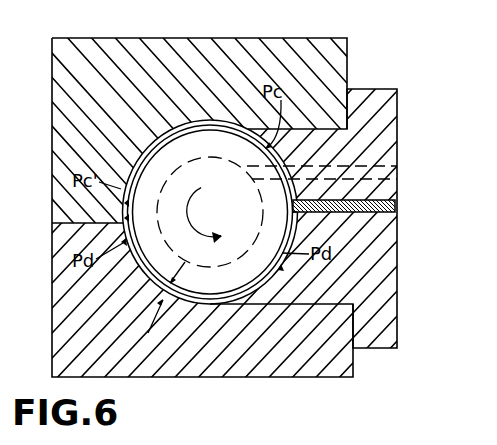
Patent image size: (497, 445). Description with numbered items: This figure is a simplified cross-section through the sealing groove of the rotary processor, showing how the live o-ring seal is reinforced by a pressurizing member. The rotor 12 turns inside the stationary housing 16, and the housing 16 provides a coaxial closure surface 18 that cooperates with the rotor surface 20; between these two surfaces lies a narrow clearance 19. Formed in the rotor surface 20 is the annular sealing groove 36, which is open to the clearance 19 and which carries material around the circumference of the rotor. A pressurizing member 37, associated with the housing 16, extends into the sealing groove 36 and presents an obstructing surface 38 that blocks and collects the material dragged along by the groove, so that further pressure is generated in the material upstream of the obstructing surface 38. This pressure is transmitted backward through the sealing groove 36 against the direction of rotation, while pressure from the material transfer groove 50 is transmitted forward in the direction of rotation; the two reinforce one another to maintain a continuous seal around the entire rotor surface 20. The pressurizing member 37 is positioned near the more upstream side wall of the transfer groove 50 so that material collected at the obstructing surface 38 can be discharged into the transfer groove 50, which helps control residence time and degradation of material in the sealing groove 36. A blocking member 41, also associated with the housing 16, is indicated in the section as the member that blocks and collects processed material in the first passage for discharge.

The rotor 12 is at (165, 260).
The housing 16 is at (65, 323).
The closure surface 18 is at (213, 304).
The clearance 19 is at (170, 296).
The rotor surface 20 is at (268, 285).
The sealing groove 36 is at (147, 148).
The pressurizing member 37 is at (394, 206).
The obstructing surface 38 is at (300, 212).
The blocking member 41 is at (397, 153).
The material transfer groove 50 is at (299, 157).